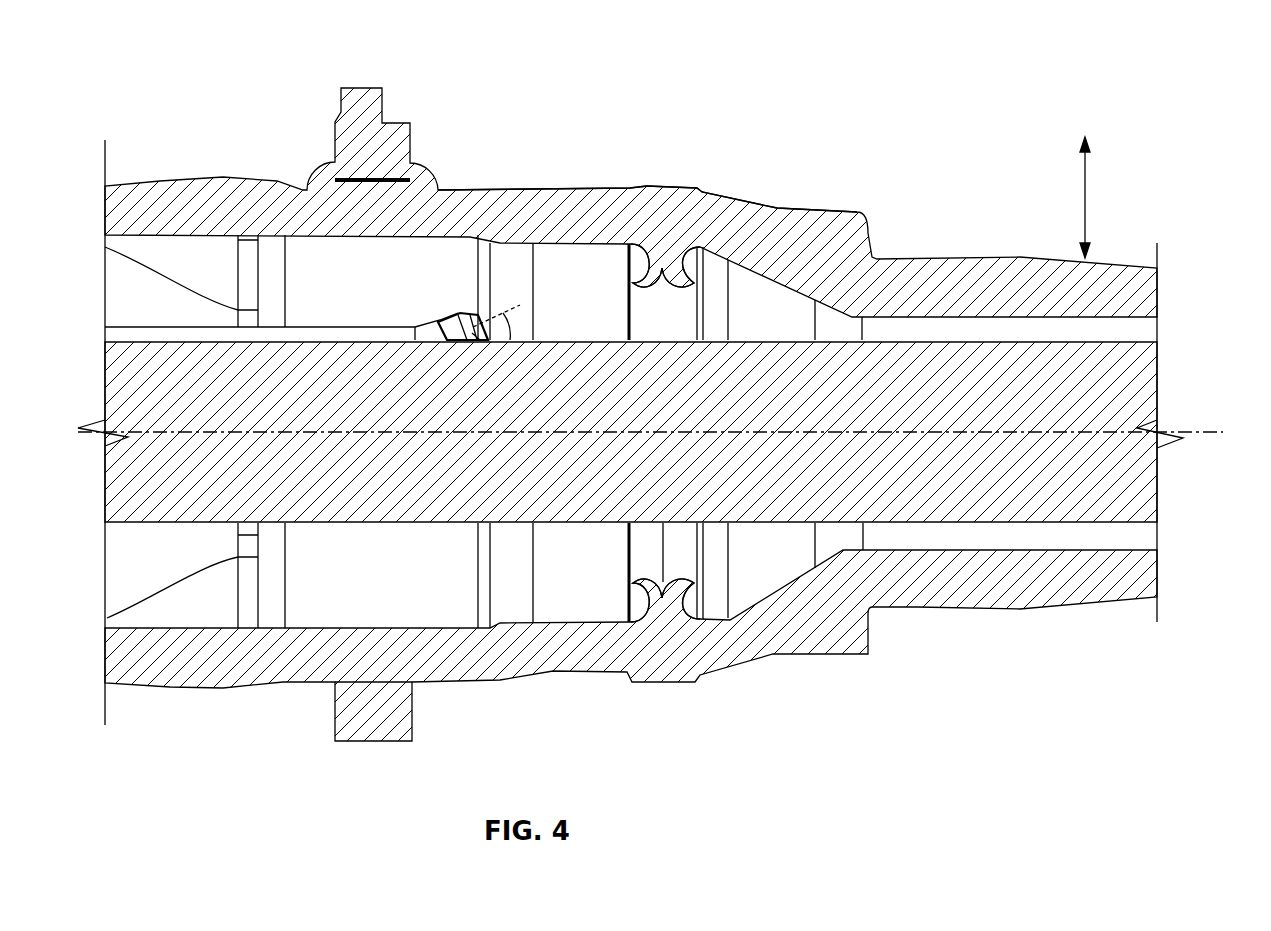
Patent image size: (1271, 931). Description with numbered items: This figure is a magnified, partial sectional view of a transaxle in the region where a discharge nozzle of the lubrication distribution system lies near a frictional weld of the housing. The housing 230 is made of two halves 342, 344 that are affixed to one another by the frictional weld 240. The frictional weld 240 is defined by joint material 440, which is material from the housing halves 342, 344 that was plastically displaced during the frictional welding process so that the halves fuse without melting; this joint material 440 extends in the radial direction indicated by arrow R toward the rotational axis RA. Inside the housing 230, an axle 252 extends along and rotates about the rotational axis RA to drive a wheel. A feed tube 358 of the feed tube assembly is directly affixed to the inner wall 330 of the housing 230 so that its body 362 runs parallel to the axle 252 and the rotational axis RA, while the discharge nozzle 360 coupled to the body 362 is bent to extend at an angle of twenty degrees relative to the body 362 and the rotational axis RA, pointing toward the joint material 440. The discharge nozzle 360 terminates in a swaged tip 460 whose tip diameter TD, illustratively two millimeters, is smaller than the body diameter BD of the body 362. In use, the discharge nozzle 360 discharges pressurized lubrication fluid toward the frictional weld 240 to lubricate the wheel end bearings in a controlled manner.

The housing 230 is at (503, 360).
The frictional weld 240 is at (663, 262).
The axle 252 is at (858, 417).
The inner wall 330 is at (138, 297).
The housing half 342 is at (590, 217).
The housing half 344 is at (588, 648).
The feed tube 358 is at (188, 333).
The discharge nozzle 360 is at (437, 323).
The body 362 is at (357, 333).
The joint material 440 is at (705, 258).
The swaged tip 460 is at (477, 307).
The body diameter BD is at (392, 333).
The tip diameter TD is at (547, 357).
The radial direction R is at (1088, 197).
The rotational axis RA is at (1110, 433).